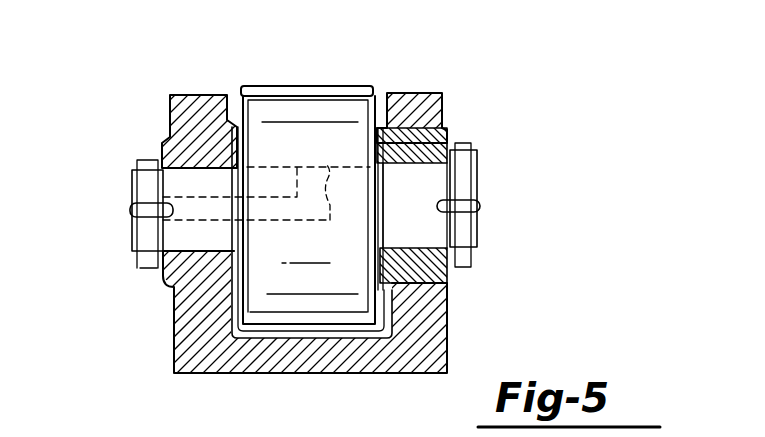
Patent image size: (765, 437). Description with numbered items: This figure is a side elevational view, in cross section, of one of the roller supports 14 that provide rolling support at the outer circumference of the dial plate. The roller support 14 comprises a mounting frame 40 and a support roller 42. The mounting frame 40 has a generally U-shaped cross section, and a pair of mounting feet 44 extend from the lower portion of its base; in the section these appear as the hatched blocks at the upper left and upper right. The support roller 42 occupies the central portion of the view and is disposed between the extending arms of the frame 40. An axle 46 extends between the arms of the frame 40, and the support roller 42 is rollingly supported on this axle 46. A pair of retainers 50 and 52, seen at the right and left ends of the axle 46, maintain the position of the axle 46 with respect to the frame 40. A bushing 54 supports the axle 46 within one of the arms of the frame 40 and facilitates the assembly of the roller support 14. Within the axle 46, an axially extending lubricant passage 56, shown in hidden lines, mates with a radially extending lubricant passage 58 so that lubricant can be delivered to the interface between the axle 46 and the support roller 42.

The roller support 14 is at (68, 126).
The mounting frame 40 is at (263, 352).
The support roller 42 is at (332, 108).
The mounting feet 44 is at (192, 102).
The axle 46 is at (428, 196).
The retainer 50 is at (480, 149).
The retainer 52 is at (135, 160).
The bushing 54 is at (433, 273).
The axially extending lubricant passage 56 is at (190, 226).
The radially extending lubricant passage 58 is at (328, 162).